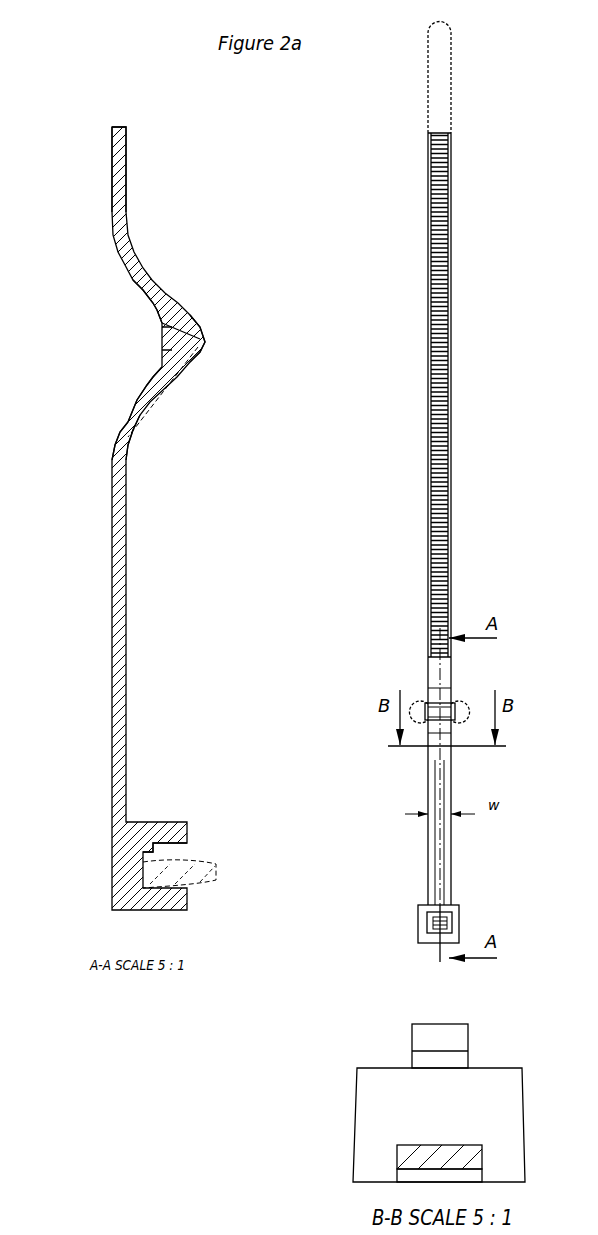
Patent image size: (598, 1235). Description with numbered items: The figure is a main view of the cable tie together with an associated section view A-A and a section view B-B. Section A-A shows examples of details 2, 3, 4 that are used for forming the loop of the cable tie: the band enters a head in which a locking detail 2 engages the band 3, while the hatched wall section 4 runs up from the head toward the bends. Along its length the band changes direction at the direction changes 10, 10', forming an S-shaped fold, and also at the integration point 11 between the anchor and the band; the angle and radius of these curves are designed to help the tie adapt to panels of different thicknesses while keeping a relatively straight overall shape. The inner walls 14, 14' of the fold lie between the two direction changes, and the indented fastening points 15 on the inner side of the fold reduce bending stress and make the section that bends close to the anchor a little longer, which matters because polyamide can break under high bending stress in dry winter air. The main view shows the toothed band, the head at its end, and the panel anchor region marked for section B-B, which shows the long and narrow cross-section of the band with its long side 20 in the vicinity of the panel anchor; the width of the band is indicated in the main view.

The loop-forming detail 2 is at (151, 851).
The loop-forming detail 3 is at (195, 858).
The loop-forming detail 4 is at (111, 170).
The direction change 10 is at (121, 518).
The direction change 10' is at (89, 424).
The integration point 11 is at (195, 339).
The first inner wall of the fold 14 is at (108, 301).
The second inner wall of the fold 14' is at (109, 382).
The indented fastening point 15 is at (161, 350).
The long side of the band 20 is at (457, 1137).